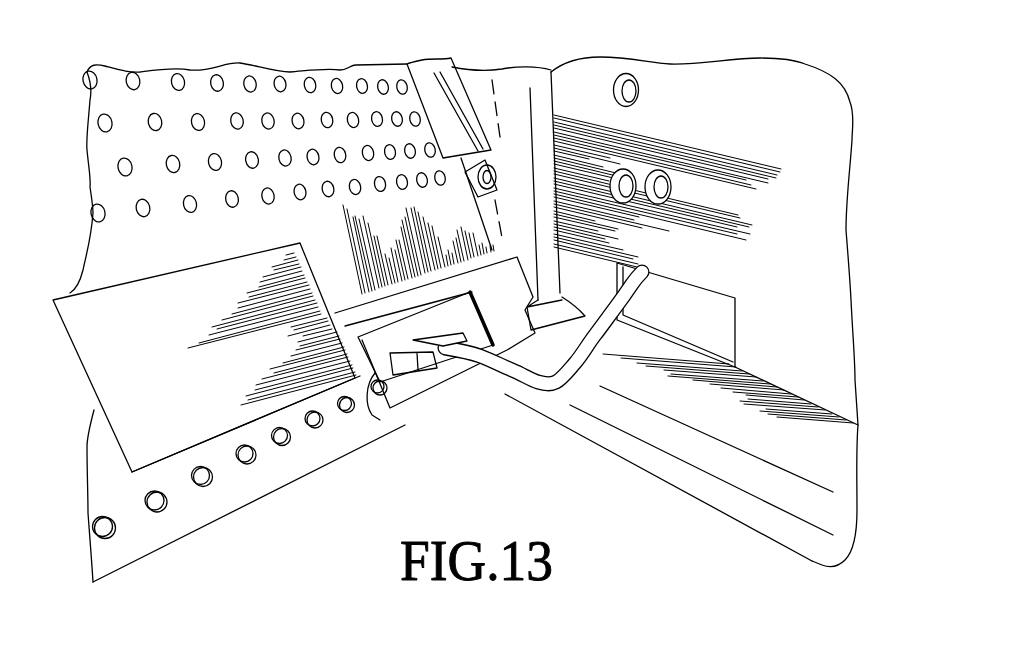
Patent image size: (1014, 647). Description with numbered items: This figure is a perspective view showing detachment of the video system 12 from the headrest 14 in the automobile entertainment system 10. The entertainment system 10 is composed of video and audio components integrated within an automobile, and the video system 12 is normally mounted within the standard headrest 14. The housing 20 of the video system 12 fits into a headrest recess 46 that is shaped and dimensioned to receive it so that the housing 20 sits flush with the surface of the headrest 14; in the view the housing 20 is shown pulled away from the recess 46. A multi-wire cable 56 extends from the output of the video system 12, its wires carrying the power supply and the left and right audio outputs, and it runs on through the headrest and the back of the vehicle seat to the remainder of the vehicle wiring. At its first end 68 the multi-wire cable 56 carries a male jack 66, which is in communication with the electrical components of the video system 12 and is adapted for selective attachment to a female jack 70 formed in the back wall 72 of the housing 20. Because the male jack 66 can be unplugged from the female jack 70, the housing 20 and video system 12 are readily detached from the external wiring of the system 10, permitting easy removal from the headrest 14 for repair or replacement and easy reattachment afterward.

The automobile entertainment system 10 is at (285, 523).
The video system 12 is at (378, 73).
The headrest 14 is at (692, 453).
The housing 20 is at (195, 97).
The headrest recess 46 is at (697, 108).
The multi-wire cable 56 is at (620, 306).
The male jack 66 is at (430, 357).
The first end 68 is at (468, 356).
The female jack 70 is at (373, 383).
The back wall 72 is at (140, 147).